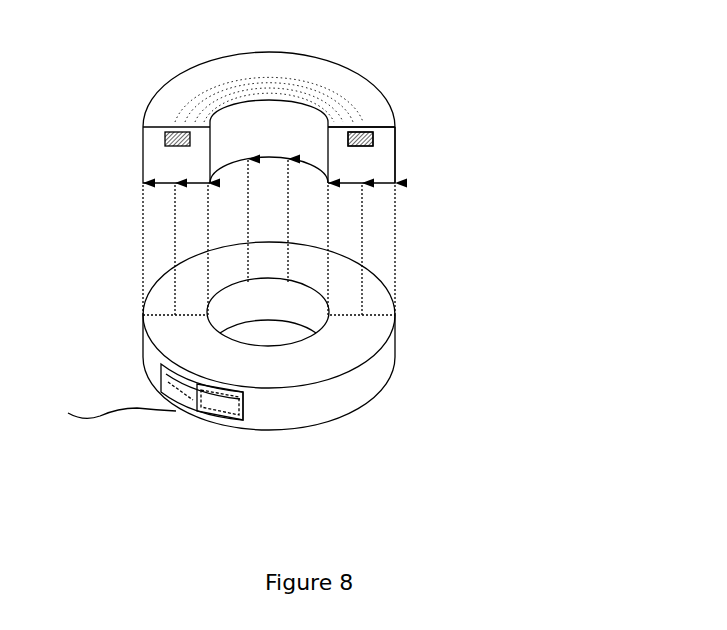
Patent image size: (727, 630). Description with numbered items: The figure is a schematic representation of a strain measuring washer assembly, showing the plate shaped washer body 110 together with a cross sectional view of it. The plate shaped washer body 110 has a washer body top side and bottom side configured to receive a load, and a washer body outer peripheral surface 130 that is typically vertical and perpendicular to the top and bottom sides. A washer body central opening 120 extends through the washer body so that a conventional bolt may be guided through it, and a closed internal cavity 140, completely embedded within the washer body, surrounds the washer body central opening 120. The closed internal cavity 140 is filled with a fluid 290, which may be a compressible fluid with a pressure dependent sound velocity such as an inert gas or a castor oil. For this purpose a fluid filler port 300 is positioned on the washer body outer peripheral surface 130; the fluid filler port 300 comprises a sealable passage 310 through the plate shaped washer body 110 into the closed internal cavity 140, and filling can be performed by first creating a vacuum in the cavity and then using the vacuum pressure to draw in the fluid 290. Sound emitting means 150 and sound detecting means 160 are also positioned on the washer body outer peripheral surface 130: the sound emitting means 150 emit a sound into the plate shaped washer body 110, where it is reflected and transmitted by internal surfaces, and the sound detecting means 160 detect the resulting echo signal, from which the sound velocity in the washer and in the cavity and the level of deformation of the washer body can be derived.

The plate shaped washer body 110 is at (381, 163).
The washer body central opening 120 is at (258, 332).
The washer body outer peripheral surface 130 is at (332, 402).
The closed internal cavity 140 is at (382, 131).
The sound emitting means 150 is at (178, 392).
The sound detecting means 160 is at (213, 400).
The fluid 290 is at (173, 132).
The fluid filler port 300 is at (376, 139).
The sealable passage 310 is at (378, 142).